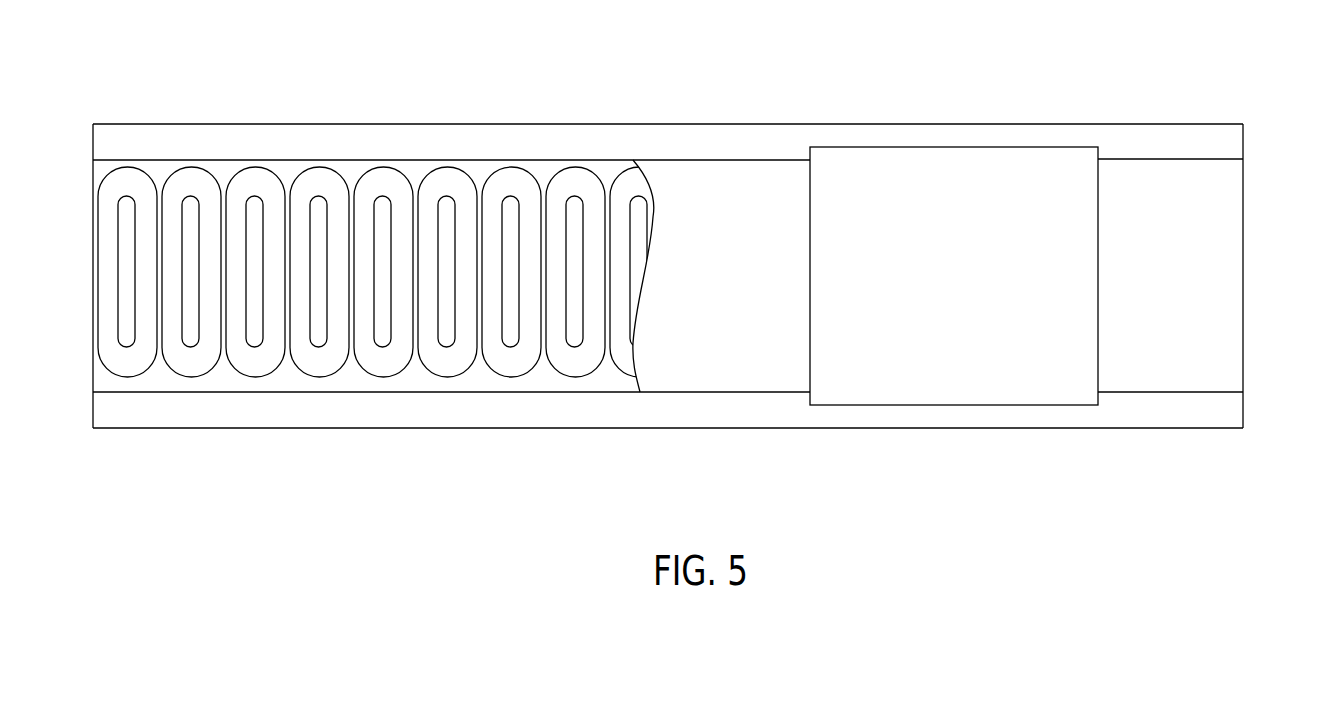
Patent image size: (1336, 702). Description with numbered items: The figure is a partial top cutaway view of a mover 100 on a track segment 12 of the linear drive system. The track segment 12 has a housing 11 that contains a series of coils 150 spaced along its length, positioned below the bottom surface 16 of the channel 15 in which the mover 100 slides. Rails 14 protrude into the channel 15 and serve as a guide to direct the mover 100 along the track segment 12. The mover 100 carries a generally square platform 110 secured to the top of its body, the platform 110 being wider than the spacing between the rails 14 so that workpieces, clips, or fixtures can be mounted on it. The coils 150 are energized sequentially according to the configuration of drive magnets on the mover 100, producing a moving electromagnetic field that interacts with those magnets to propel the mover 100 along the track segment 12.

The coils 150 is at (318, 177).
The rail 14 is at (592, 143).
The track segment 12 is at (675, 143).
The mover 100 is at (937, 200).
The platform 110 is at (988, 277).
The bottom surface 16 is at (741, 281).
The channel 15 is at (1217, 323).
The housing 11 is at (1046, 441).